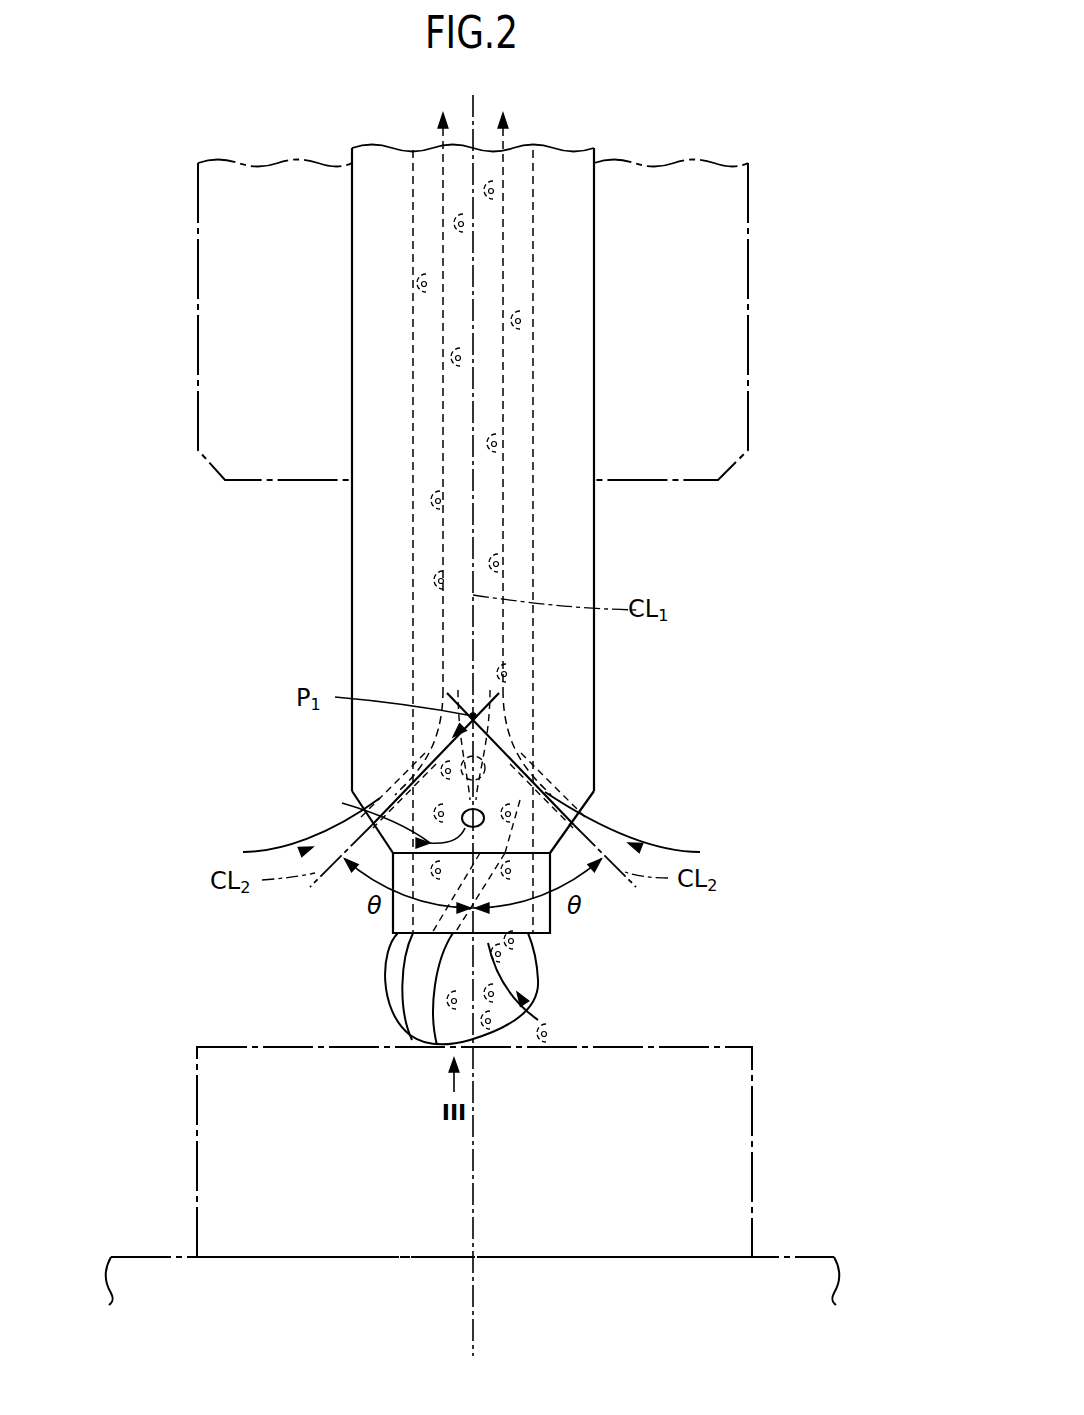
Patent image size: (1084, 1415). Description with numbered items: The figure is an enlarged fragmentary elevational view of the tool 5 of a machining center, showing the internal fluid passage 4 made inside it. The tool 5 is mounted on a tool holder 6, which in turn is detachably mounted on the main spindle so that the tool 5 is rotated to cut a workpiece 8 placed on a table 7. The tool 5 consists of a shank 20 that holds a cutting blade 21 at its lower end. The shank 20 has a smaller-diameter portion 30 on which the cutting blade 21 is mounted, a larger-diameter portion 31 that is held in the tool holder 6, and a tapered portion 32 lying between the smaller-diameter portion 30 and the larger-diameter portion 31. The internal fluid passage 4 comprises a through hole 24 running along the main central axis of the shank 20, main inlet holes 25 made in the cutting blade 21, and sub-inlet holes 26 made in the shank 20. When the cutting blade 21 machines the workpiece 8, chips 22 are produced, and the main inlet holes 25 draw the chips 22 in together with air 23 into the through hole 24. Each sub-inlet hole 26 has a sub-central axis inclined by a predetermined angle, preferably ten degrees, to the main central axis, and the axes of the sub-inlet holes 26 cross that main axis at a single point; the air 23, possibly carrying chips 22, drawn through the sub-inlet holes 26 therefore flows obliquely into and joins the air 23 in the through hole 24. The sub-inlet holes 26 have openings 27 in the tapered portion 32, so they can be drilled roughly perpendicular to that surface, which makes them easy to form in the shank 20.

The internal fluid passage 4 is at (522, 522).
The tool 5 is at (533, 546).
The tool holder 6 is at (748, 340).
The table 7 is at (806, 1257).
The workpiece 8 is at (752, 1072).
The shank 20 is at (612, 640).
The cutting blade 21 is at (540, 977).
The chips 22 is at (520, 318).
The air 23 is at (503, 228).
The through hole 24 is at (522, 566).
The main inlet hole 25 is at (505, 1021).
The sub-inlet hole 26 is at (540, 744).
The opening 27 is at (367, 832).
The smaller-diameter portion 30 is at (553, 915).
The larger-diameter portion 31 is at (594, 668).
The tapered portion 32 is at (588, 803).